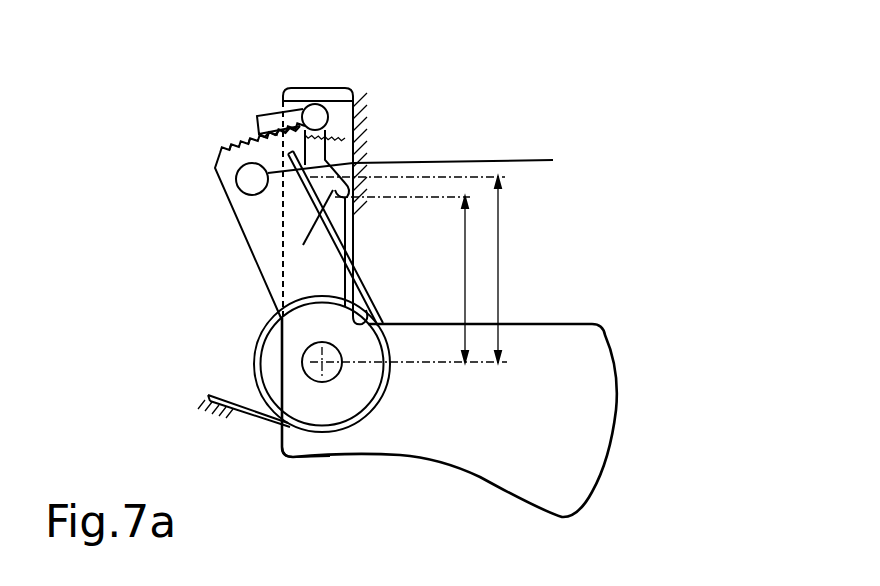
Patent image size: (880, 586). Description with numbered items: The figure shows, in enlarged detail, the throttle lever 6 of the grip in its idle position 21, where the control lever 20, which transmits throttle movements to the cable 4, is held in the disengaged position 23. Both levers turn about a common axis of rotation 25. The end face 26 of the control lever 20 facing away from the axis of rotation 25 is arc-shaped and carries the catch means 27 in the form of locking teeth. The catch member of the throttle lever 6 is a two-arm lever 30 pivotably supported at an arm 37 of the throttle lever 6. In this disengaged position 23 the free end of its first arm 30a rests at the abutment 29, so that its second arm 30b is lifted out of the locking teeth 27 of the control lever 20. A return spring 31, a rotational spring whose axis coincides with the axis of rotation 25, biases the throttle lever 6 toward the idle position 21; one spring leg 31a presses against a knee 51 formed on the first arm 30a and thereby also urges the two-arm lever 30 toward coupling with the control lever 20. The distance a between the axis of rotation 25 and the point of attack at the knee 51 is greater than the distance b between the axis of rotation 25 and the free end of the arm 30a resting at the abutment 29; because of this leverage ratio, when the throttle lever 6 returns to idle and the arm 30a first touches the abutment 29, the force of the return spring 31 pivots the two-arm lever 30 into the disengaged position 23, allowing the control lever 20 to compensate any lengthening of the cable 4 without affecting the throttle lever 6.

The cable 4 is at (512, 160).
The throttle lever 6 is at (495, 455).
The control lever 20 is at (255, 245).
The idle position 21 is at (392, 458).
The disengaged position 23 is at (247, 140).
The axis of rotation 25 is at (322, 378).
The end face 26 is at (228, 157).
The catch means 27 is at (248, 138).
The abutment 29 is at (360, 153).
The two-arm lever 30 is at (318, 148).
The first arm 30a is at (312, 237).
The second arm 30b is at (262, 118).
The return spring 31 is at (383, 395).
The spring leg 31a is at (343, 237).
The arm 37 is at (337, 88).
The knee 51 is at (298, 191).
The distance a is at (500, 263).
The distance b is at (463, 285).